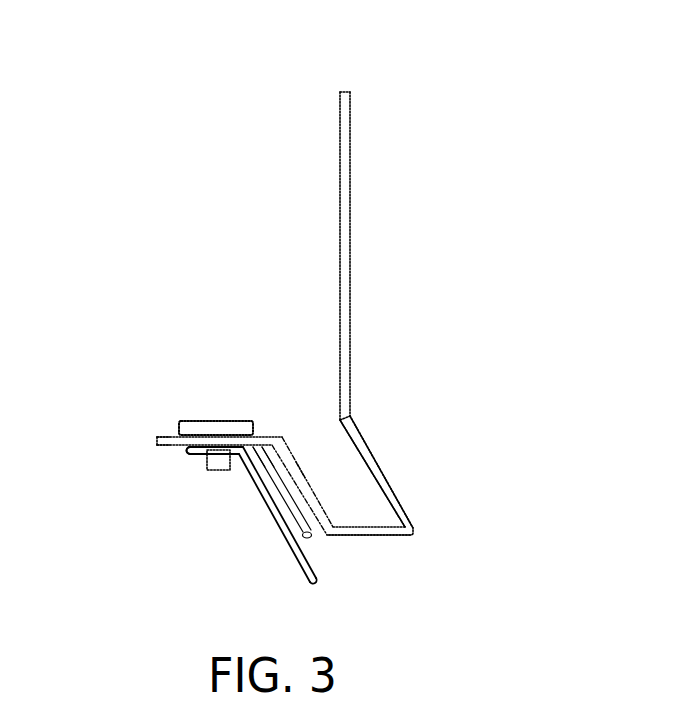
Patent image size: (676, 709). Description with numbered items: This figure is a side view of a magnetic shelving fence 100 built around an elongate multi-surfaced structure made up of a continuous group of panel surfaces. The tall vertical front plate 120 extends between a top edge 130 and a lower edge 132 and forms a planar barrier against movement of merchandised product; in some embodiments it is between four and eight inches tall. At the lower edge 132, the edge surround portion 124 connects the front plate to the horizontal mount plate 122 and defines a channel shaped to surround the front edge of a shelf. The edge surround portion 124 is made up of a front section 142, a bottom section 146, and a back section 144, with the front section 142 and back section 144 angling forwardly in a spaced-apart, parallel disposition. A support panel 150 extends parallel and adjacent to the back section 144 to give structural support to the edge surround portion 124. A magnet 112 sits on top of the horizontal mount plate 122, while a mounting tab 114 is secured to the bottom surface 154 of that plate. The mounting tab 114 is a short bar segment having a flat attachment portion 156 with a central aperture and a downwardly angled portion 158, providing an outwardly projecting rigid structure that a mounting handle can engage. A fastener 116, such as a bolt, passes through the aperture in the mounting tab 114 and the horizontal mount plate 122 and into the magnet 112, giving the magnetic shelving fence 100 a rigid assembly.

The magnetic shelving fence 100 is at (156, 150).
The magnet 112 is at (205, 421).
The mounting tab 114 is at (283, 533).
The fastener 116 is at (220, 462).
The vertical front plate 120 is at (344, 203).
The horizontal mount plate 122 is at (155, 438).
The edge surround portion 124 is at (379, 467).
The top edge 130 is at (348, 92).
The lower edge 132 is at (350, 417).
The front section 142 is at (390, 488).
The back section 144 is at (305, 478).
The bottom section 146 is at (378, 535).
The support panel 150 is at (310, 538).
The bottom surface 154 is at (163, 448).
The flat attachment portion 156 is at (198, 450).
The downwardly angled portion 158 is at (252, 475).